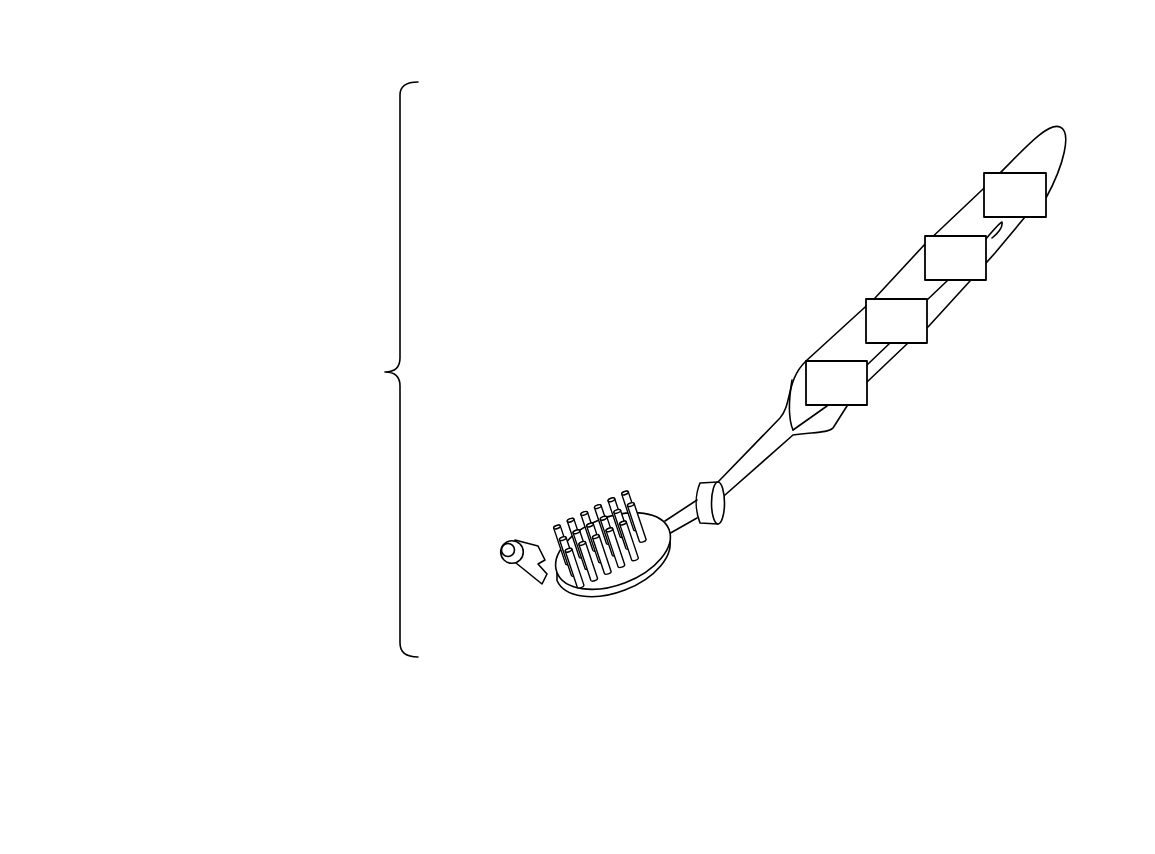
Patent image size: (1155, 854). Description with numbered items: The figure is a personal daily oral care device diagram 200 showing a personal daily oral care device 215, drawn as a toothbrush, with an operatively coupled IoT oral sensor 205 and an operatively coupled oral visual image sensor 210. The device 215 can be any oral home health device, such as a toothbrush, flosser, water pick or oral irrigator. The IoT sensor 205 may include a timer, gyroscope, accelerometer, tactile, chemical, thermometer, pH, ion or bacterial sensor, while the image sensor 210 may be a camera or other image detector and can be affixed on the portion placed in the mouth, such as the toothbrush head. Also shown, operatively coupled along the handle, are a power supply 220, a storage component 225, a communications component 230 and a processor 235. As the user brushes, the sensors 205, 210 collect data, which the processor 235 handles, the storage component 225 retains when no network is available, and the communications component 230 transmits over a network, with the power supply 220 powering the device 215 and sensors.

The personal daily oral care device diagram 200 is at (234, 56).
The IoT oral sensor 205 is at (805, 365).
The oral visual image sensor 210 is at (516, 490).
The personal daily oral care device 215 is at (378, 369).
The power supply 220 is at (1046, 208).
The storage component 225 is at (986, 271).
The communications component 230 is at (927, 333).
The processor 235 is at (867, 395).